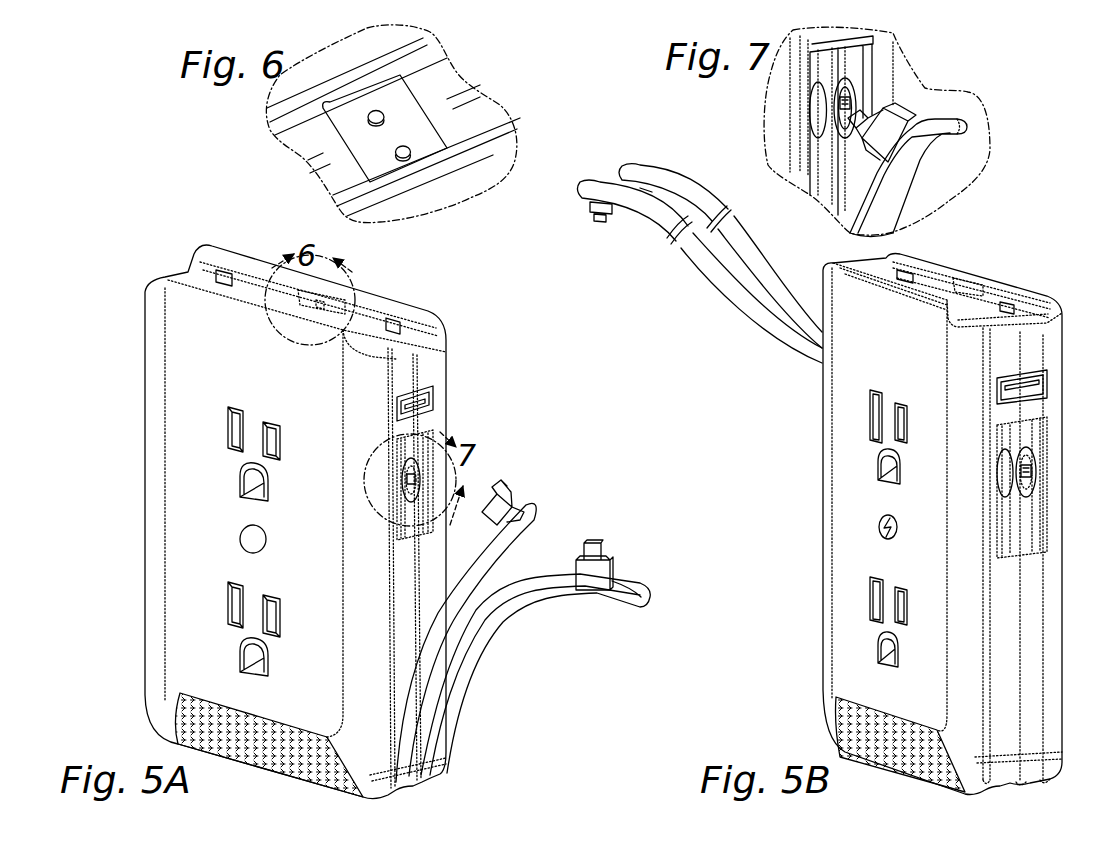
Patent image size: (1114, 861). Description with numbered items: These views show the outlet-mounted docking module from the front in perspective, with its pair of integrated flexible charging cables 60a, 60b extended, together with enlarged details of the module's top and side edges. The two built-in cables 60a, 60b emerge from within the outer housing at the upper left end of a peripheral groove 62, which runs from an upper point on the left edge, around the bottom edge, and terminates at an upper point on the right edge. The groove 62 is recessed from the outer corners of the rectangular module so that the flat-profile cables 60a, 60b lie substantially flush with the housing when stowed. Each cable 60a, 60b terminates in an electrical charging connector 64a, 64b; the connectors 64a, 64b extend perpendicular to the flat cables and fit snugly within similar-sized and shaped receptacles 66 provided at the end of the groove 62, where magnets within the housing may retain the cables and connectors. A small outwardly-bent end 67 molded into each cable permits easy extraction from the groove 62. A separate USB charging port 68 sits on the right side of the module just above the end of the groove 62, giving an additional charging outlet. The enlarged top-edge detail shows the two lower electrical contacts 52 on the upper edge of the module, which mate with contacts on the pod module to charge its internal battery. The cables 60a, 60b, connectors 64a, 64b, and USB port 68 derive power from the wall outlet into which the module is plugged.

In FIG. 6, the lower electrical contacts 52 is at (405, 149).
In FIG. 5A, the flexible charging cable 60a is at (427, 690).
In FIG. 5B, the flexible charging cable 60a is at (690, 258).
In FIG. 5A, the flexible charging cable 60b is at (465, 677).
In FIG. 5B, the flexible charging cable 60b is at (676, 180).
In FIG. 5A, the peripheral groove 62 is at (415, 592).
In FIG. 5A, the electrical charging connector 64a is at (499, 498).
In FIG. 5A, the electrical charging connector 64b is at (614, 566).
In FIG. 7, the receptacles 66 is at (848, 95).
In FIG. 5B, the receptacles 66 is at (1024, 480).
In FIG. 7, the outwardly-bent end 67 is at (952, 118).
In FIG. 5B, the USB charging port 68 is at (1050, 384).